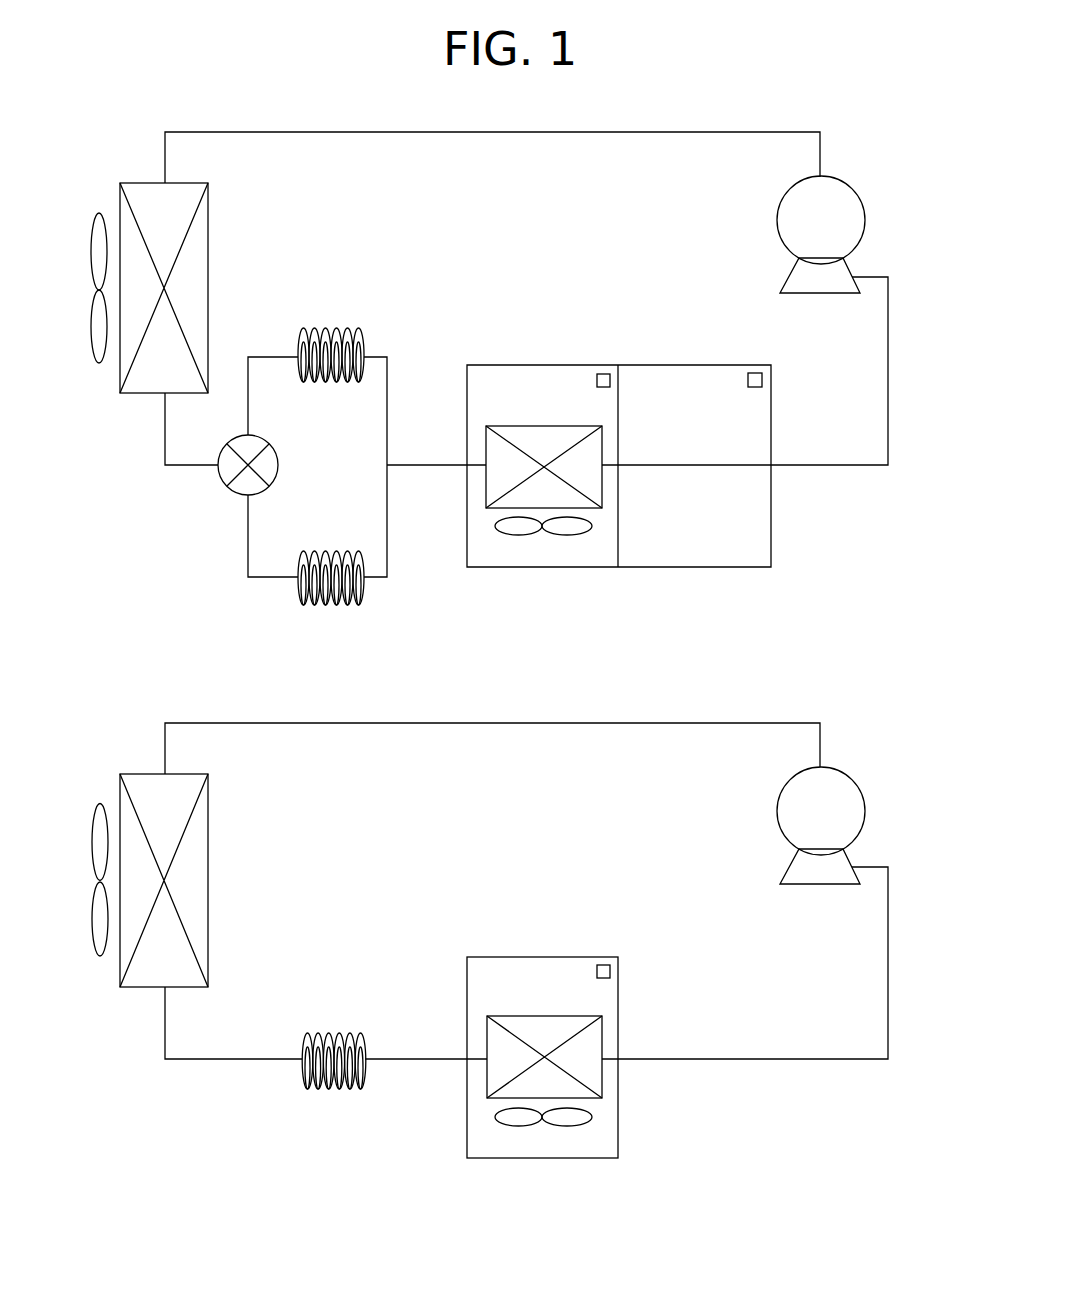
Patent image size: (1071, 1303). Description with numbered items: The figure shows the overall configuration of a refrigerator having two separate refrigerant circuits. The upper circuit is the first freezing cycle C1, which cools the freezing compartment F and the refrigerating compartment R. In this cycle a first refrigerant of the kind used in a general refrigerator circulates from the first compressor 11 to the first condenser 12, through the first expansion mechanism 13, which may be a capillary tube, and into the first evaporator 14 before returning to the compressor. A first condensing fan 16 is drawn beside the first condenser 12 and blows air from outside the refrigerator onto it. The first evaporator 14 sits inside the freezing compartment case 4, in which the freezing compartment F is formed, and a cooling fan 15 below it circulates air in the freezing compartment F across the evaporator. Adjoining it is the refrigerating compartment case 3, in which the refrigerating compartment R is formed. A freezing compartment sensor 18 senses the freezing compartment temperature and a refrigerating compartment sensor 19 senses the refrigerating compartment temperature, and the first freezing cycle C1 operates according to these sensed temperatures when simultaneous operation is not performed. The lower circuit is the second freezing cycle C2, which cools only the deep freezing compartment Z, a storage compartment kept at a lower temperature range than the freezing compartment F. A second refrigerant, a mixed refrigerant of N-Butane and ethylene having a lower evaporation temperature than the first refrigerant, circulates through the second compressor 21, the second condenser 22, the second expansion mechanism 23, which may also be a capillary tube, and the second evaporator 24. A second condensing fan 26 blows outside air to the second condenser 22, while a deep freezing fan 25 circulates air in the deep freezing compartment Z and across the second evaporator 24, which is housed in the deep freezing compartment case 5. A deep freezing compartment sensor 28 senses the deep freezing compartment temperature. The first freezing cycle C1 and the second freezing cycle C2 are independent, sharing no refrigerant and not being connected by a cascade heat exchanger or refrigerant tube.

The first freezing cycle C1 is at (95, 152).
The first compressor 11 is at (852, 212).
The first condenser 12 is at (145, 192).
The first expansion mechanism 13 is at (228, 588).
The first evaporator 14 is at (538, 435).
The cooling fan 15 is at (515, 530).
The first condensing fan 16 is at (97, 246).
The freezing compartment sensor 18 is at (603, 372).
The refrigerating compartment sensor 19 is at (755, 372).
The refrigerating compartment case 3 is at (772, 547).
The freezing compartment case 4 is at (466, 548).
The freezing compartment F is at (563, 551).
The refrigerating compartment R is at (708, 551).
The second freezing cycle C2 is at (95, 746).
The second compressor 21 is at (852, 803).
The second condenser 22 is at (146, 786).
The second expansion mechanism 23 is at (332, 1033).
The second evaporator 24 is at (538, 1025).
The deep freezing fan 25 is at (515, 1120).
The second condensing fan 26 is at (97, 838).
The deep freezing compartment sensor 28 is at (603, 963).
The deep freezing compartment case 5 is at (620, 1137).
The deep freezing compartment Z is at (545, 1141).